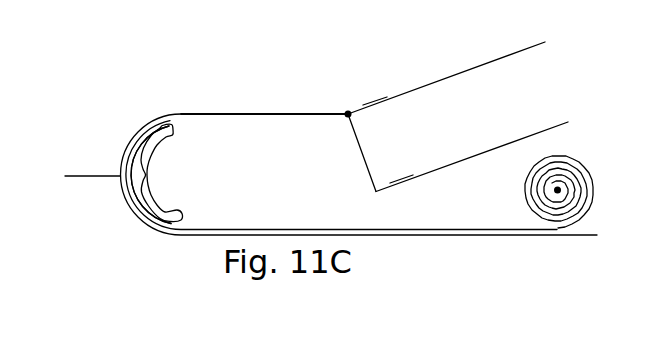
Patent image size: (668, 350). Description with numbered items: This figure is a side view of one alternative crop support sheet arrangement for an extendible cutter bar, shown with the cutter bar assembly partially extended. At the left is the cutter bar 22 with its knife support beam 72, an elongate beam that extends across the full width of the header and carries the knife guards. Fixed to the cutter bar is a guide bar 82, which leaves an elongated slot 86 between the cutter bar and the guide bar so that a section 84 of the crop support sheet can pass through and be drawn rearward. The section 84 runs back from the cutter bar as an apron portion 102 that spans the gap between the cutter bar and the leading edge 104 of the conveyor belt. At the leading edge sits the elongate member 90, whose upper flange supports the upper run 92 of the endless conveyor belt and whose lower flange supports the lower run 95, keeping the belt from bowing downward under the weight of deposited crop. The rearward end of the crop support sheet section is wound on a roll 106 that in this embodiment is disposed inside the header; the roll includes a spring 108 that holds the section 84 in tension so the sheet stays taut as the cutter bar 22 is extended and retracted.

The cutter bar 22 is at (137, 126).
The knife support beam 72 is at (87, 175).
The guide bar 82 is at (146, 176).
The section of the crop support sheet 84 is at (275, 115).
The elongated slot 86 is at (189, 109).
The elongate member 90 is at (357, 108).
The upper run of the conveyor belt 92 is at (443, 75).
The lower run of the endless belt 95 is at (448, 162).
The apron portion 102 is at (243, 115).
The leading edge of the conveyor belt 104 is at (348, 86).
The roll 106 is at (555, 153).
The spring 108 is at (559, 188).